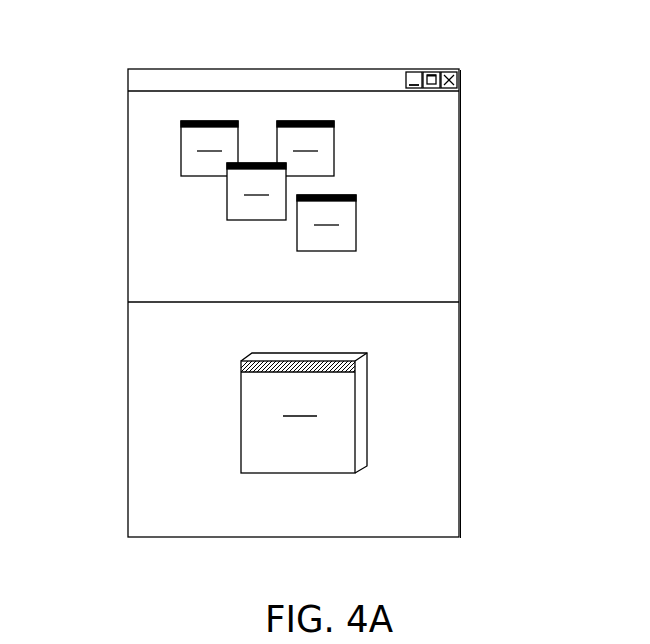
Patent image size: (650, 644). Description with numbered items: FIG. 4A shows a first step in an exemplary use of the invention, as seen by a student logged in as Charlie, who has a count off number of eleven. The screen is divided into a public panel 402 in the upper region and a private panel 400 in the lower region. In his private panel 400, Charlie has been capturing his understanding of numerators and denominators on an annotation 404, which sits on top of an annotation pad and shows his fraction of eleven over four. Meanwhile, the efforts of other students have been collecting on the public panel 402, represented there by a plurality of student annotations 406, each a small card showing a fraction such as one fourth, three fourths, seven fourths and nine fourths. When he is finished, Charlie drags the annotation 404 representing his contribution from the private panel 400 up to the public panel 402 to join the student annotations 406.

The private panel 400 is at (459, 404).
The public panel 402 is at (459, 124).
The annotation 404 is at (241, 401).
The student annotations 406 is at (296, 132).